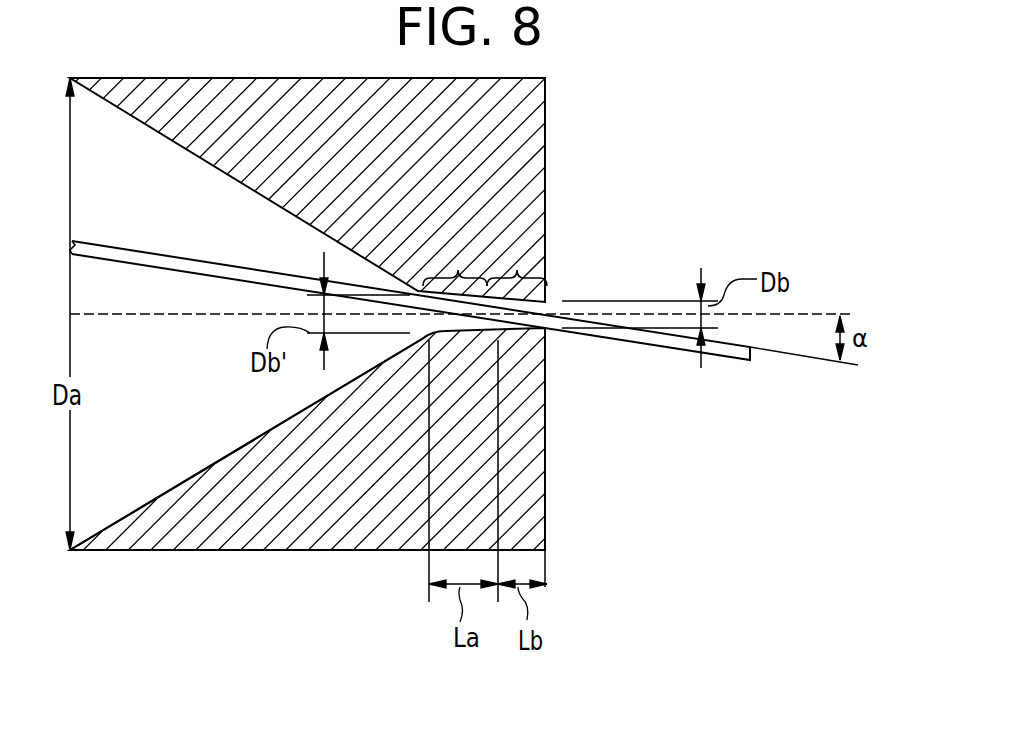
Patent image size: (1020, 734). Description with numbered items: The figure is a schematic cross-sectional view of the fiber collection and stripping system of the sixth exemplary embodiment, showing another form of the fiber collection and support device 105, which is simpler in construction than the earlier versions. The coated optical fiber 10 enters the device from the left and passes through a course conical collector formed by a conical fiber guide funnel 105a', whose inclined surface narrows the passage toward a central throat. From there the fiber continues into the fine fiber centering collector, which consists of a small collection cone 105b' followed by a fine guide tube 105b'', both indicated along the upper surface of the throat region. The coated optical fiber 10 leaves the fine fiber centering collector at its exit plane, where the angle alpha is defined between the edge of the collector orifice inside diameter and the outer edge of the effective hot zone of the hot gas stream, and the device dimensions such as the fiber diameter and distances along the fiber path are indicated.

The coated optical fiber 10 is at (668, 348).
The fiber collection and support device 105 is at (187, 550).
The conical fiber guide funnel 105a' is at (246, 444).
The small collection cone 105b' is at (436, 234).
The fine guide tube 105b'' is at (510, 236).